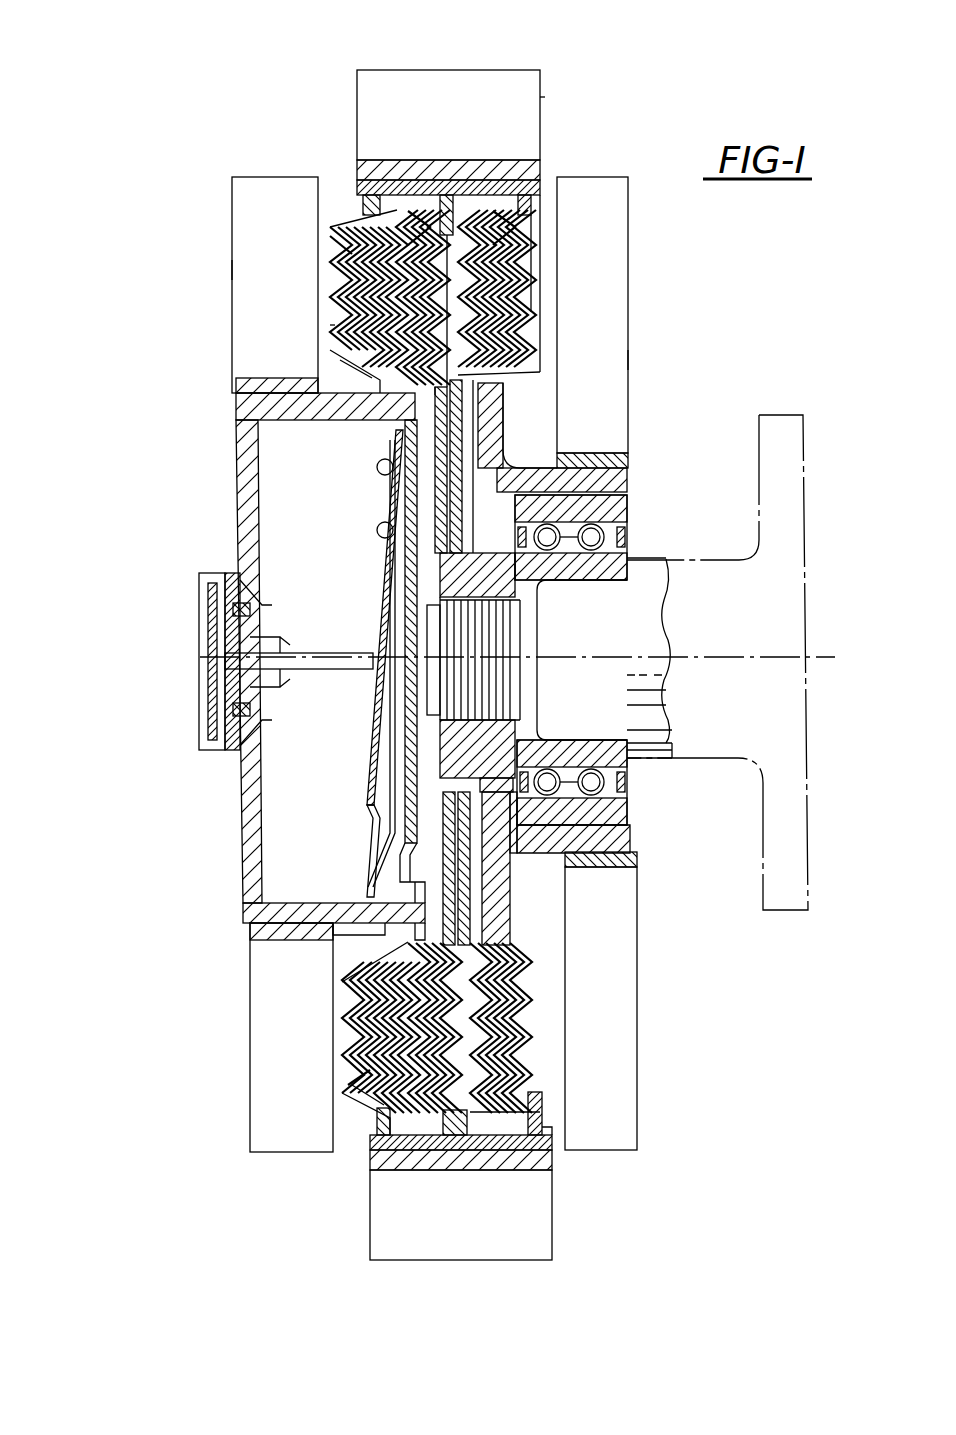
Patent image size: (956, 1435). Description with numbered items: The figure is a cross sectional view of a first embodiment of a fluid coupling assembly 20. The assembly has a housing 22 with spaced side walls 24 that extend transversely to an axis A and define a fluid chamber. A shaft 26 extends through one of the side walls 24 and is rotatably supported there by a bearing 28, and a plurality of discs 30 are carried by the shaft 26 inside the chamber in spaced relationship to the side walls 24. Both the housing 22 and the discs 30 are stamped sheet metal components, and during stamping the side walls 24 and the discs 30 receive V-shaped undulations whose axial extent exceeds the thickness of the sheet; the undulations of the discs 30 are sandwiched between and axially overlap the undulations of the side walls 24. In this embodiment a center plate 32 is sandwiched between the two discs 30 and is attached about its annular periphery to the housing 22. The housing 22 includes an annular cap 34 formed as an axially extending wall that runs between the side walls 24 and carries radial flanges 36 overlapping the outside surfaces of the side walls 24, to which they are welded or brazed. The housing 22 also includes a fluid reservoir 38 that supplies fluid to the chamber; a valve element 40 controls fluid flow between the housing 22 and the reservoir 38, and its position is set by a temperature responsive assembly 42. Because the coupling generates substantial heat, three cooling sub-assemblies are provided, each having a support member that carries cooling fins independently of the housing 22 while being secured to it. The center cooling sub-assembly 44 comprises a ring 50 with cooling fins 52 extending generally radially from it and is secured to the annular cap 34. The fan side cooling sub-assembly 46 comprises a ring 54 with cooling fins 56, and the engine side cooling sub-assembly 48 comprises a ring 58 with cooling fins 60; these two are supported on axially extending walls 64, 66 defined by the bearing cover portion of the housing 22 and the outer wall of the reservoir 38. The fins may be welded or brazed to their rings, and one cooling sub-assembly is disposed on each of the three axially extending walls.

The fluid coupling assembly 20 is at (203, 116).
The housing 22 is at (318, 327).
The side walls 24 is at (340, 290).
The shaft 26 is at (628, 712).
The bearing 28 is at (630, 505).
The discs 30 is at (380, 228).
The center plate 32 is at (430, 205).
The annular cap 34 is at (548, 190).
The radial flanges 36 is at (355, 185).
The fluid reservoir 38 is at (245, 848).
The valve element 40 is at (375, 745).
The temperature responsive assembly 42 is at (215, 665).
The center cooling sub-assembly 44 is at (552, 97).
The fan side cooling sub-assembly 46 is at (230, 268).
The engine side cooling sub-assembly 48 is at (652, 358).
The ring 50 is at (465, 168).
The cooling fins 52 is at (455, 80).
The ring 54 is at (236, 395).
The cooling fins 56 is at (240, 238).
The ring 58 is at (620, 450).
The cooling fins 60 is at (622, 272).
The axially extending wall 64 is at (640, 836).
The axially extending wall 66 is at (285, 925).
The axis A is at (790, 660).